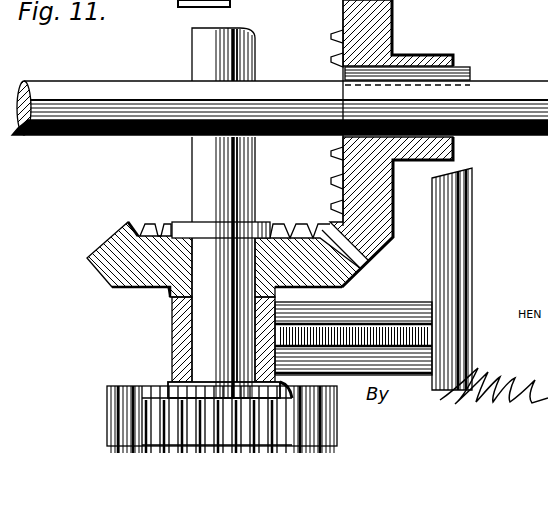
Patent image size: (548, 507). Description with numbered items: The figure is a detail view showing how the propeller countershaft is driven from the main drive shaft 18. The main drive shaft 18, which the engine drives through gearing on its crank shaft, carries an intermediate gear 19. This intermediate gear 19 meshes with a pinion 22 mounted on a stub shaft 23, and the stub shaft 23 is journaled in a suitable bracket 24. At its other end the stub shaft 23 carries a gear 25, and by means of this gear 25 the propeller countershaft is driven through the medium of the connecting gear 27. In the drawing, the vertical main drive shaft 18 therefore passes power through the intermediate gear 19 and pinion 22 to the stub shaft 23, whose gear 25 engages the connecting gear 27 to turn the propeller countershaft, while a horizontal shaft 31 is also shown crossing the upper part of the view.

The horizontal rod 31 is at (280, 67).
The main drive shaft 18 is at (203, 165).
The intermediate gear 19 is at (108, 421).
The pinion 22 is at (168, 393).
The stub shaft 23 is at (208, 334).
The bracket 24 is at (435, 328).
The gear 25 is at (126, 286).
The connecting gear 27 is at (348, 169).